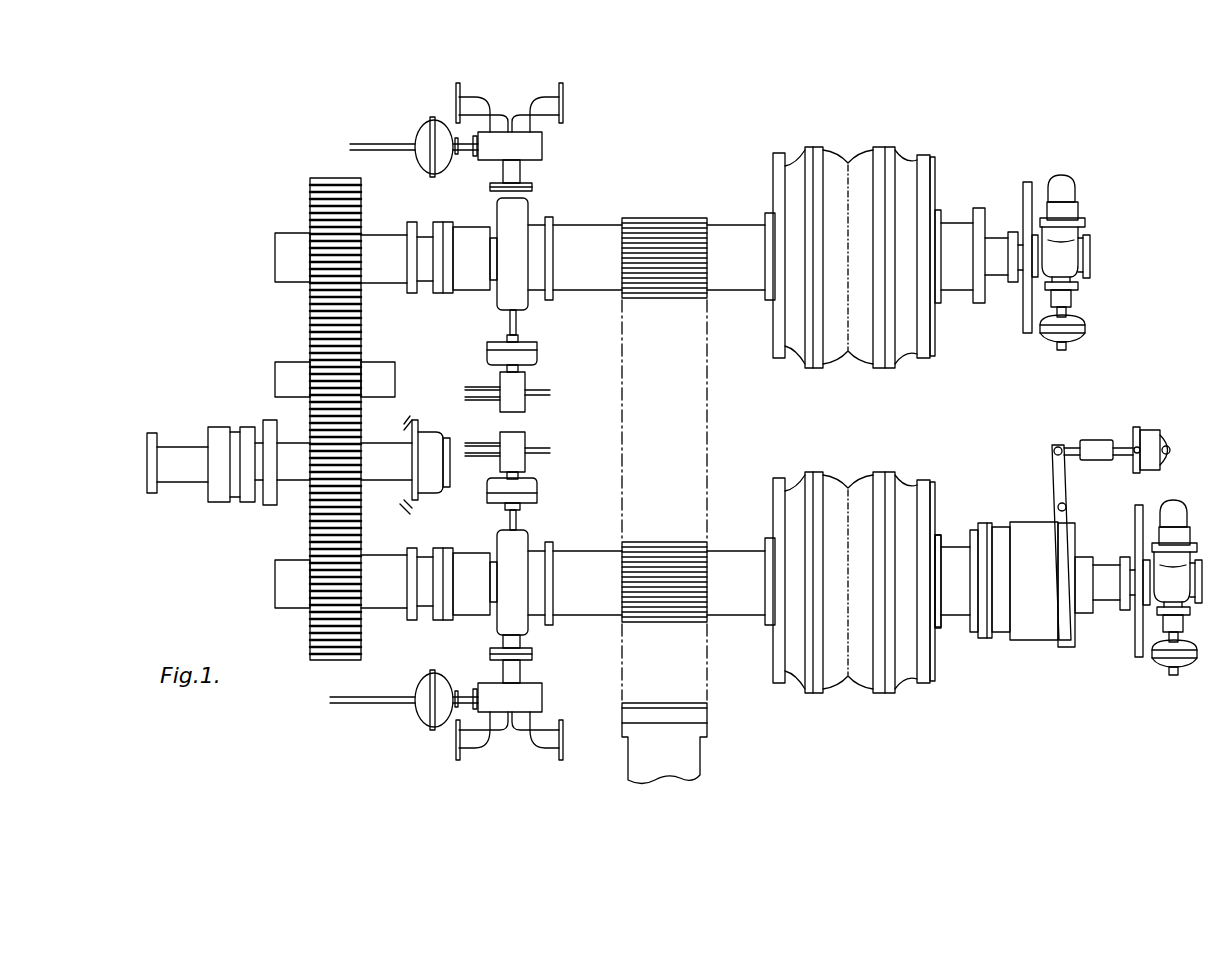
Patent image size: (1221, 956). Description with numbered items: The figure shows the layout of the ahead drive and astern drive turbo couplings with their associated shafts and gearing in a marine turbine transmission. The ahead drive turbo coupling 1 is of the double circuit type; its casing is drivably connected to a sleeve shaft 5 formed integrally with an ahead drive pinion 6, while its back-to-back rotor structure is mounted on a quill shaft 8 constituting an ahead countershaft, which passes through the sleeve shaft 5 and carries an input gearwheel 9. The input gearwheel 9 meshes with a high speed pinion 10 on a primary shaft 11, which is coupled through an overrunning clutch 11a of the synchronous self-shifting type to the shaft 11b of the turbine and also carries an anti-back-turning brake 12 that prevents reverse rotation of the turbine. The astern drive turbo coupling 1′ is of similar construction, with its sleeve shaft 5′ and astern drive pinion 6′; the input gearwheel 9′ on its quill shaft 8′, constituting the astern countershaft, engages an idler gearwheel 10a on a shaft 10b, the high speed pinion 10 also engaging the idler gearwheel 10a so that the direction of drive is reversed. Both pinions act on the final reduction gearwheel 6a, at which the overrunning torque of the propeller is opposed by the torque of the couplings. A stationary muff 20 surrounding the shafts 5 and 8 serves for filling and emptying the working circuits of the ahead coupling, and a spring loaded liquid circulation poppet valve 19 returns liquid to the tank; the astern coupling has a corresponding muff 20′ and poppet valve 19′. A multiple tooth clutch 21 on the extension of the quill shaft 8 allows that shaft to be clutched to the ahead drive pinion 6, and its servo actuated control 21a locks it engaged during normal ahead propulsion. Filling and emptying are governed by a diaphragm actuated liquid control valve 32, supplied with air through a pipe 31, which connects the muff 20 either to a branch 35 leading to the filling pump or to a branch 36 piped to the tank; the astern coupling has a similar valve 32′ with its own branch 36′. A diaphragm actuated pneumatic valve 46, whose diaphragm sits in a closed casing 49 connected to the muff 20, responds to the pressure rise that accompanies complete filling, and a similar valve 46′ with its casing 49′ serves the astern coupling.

The ahead drive turbo coupling 1 is at (852, 688).
The astern drive turbo coupling 1′ is at (855, 105).
The sleeve shaft 5 is at (733, 557).
The sleeve shaft 5′ is at (732, 235).
The ahead drive pinion 6 is at (662, 557).
The astern drive pinion 6′ is at (662, 230).
The final reduction gearwheel 6a is at (680, 753).
The quill shaft 8 is at (390, 595).
The quill shaft 8′ is at (390, 202).
The input gearwheel 9 is at (315, 633).
The input gearwheel 9′ is at (310, 313).
The high speed pinion 10 is at (335, 482).
The idler gearwheel 10a is at (346, 352).
The shaft 10b is at (395, 380).
The primary shaft 11 is at (297, 447).
The overrunning clutch 11a is at (247, 513).
The shaft of turbine 11b is at (183, 473).
The anti-back-turning brake 12 is at (433, 488).
The spring loaded liquid circulation poppet valve 19 is at (1202, 526).
The spring loaded liquid circulation poppet valve 19′ is at (1128, 185).
The stationary muff 20 is at (518, 538).
The stationary muff 20′ is at (522, 213).
The multiple tooth clutch 21 is at (1040, 643).
The servo actuated control 21a is at (1138, 427).
The pipe 31 is at (365, 700).
The diaphragm actuated liquid control valve 32 is at (533, 688).
The diaphragm actuated liquid control valve 32′ is at (595, 120).
The branch 35 is at (538, 102).
The branch 36 is at (470, 738).
The branch 36′ is at (506, 64).
The diaphragm actuated pneumatic valve 46 is at (517, 443).
The diaphragm actuated pneumatic valve 46′ is at (588, 361).
The closed casing 49 is at (530, 500).
The closed casing 49′ is at (588, 327).